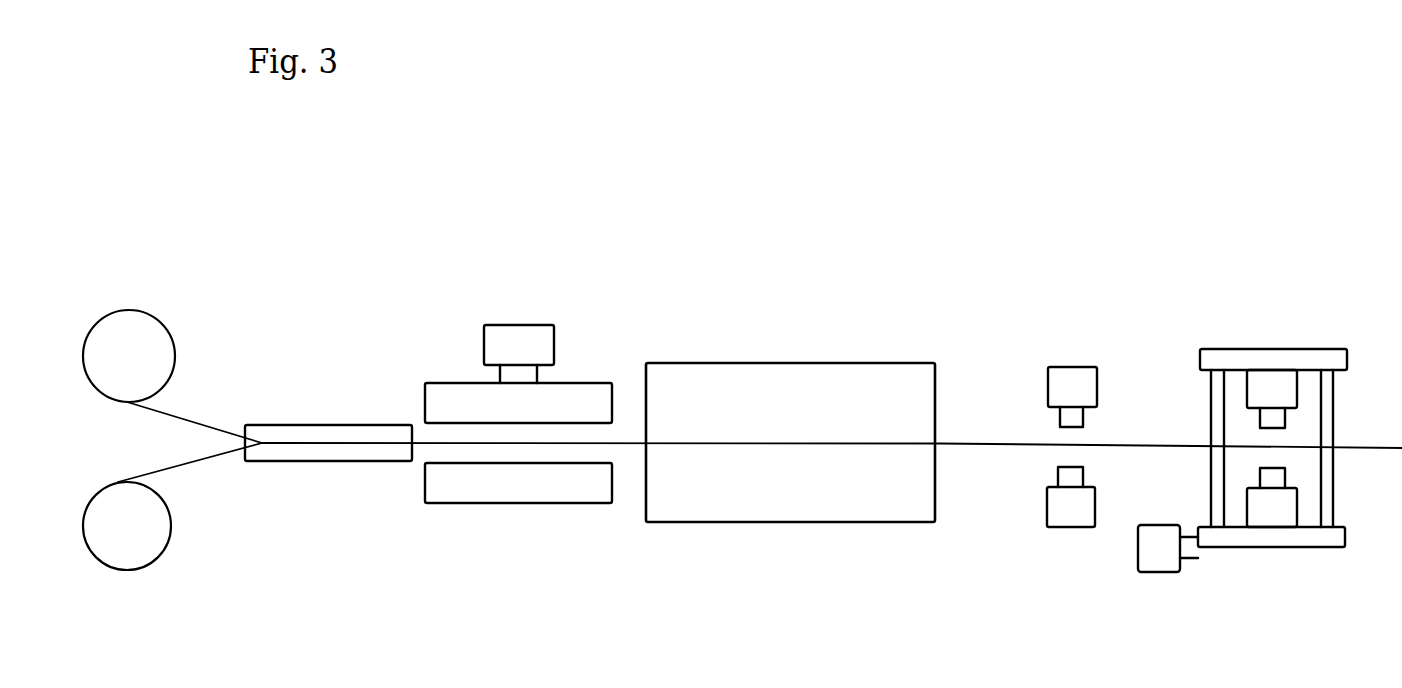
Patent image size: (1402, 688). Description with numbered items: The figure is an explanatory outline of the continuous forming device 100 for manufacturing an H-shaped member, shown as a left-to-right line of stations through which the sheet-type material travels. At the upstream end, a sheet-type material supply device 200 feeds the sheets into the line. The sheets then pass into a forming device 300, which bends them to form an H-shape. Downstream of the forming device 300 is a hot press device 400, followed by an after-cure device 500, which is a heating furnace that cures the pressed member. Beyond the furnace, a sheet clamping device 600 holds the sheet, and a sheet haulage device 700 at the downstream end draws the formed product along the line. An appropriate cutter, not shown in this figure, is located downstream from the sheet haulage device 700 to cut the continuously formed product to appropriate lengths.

The continuous forming device 100 is at (875, 192).
The sheet-type material supply device 200 is at (152, 300).
The forming device 300 is at (328, 403).
The hot press device 400 is at (512, 312).
The after-cure device 500 is at (790, 355).
The sheet clamping device 600 is at (1065, 358).
The sheet haulage device 700 is at (1257, 345).